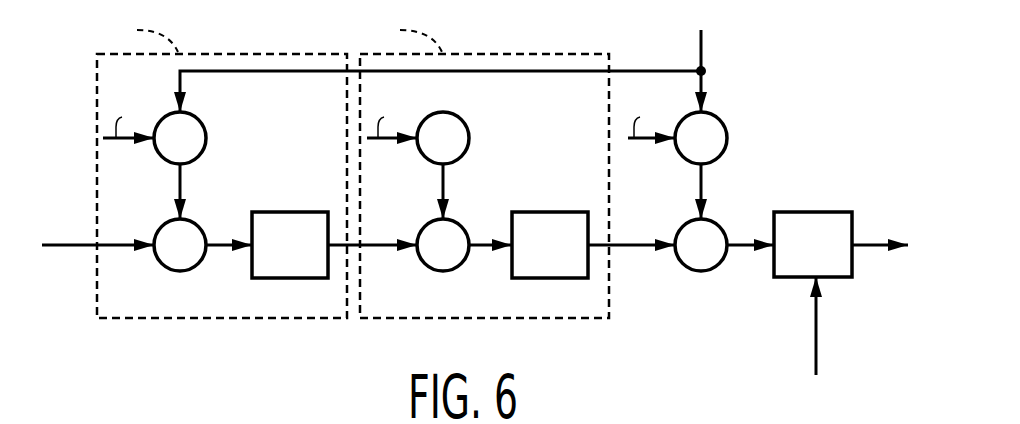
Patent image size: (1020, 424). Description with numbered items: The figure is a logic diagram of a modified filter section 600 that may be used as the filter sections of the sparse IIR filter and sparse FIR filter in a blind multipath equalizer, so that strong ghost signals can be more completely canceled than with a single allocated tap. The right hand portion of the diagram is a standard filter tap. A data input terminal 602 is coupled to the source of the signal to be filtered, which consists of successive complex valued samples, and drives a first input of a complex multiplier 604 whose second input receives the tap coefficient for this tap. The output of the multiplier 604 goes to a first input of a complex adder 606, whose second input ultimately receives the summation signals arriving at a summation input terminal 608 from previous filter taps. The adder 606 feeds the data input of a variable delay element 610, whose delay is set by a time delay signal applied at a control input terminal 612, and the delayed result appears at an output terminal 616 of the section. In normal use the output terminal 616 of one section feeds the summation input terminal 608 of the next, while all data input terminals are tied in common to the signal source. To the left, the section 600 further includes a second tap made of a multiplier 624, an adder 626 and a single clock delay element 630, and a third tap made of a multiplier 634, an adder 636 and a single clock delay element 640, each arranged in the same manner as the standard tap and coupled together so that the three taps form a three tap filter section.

The filter section 600 is at (883, 106).
The data input terminal 602 is at (703, 43).
The complex multiplier 604 is at (728, 139).
The complex adder 606 is at (704, 272).
The summation input terminal 608 is at (49, 247).
The variable delay element 610 is at (812, 212).
The control input terminal 612 is at (815, 358).
The output terminal 616 is at (878, 247).
The multiplier 624 is at (470, 139).
The adder 626 is at (443, 272).
The single clock delay element 630 is at (555, 212).
The multiplier 634 is at (207, 139).
The adder 636 is at (180, 272).
The single clock delay element 640 is at (296, 212).